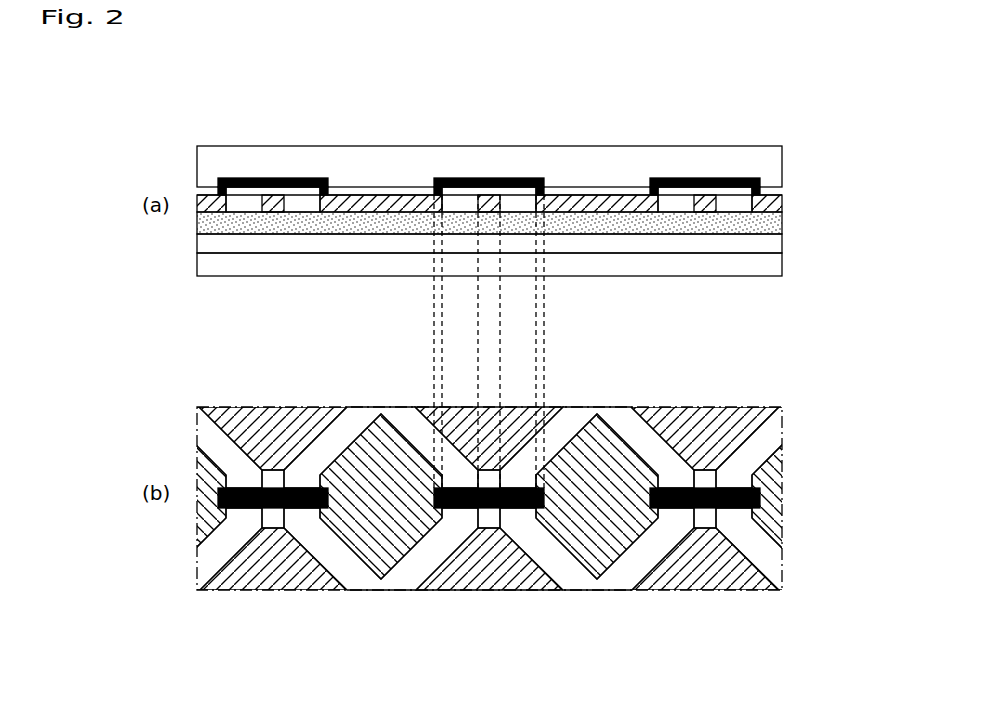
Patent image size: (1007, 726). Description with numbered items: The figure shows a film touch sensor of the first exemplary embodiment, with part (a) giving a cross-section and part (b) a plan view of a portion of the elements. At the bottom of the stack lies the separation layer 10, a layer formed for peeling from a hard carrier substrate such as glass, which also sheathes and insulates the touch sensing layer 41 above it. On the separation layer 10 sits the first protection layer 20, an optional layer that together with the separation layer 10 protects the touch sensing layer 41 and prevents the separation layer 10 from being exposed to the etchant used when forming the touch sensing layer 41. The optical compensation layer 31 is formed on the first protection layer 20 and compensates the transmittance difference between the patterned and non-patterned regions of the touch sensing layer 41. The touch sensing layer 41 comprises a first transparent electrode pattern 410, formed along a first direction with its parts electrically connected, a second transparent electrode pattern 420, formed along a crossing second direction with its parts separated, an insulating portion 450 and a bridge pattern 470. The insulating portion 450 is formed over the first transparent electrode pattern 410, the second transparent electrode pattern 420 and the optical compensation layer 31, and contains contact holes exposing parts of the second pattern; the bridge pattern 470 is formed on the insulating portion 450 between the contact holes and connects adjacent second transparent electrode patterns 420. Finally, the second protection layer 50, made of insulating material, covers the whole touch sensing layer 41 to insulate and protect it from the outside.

The separation layer 10 is at (773, 266).
The first protection layer 20 is at (773, 240).
The optical compensation layer 31 is at (773, 219).
The touch sensing layer 41 is at (672, 80).
The first transparent electrode pattern 410 is at (487, 199).
The second transparent electrode pattern 420 is at (595, 200).
The insulating portion 450 is at (520, 195).
The bridge pattern 470 is at (502, 182).
The second protection layer 50 is at (773, 163).